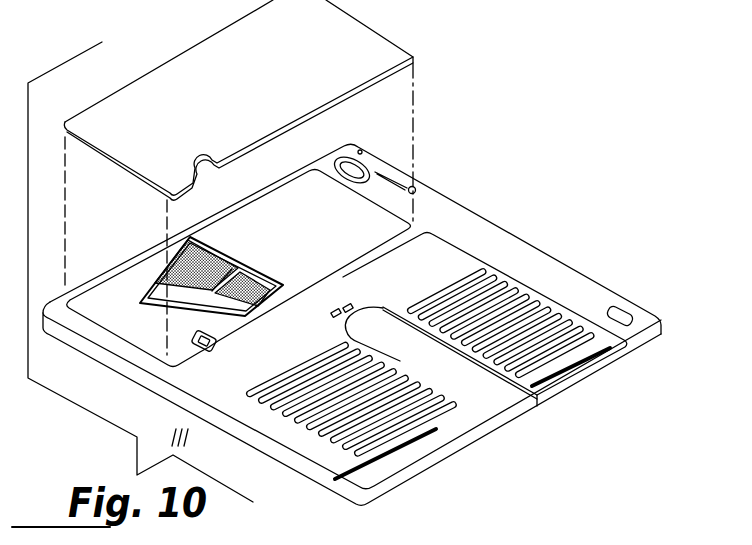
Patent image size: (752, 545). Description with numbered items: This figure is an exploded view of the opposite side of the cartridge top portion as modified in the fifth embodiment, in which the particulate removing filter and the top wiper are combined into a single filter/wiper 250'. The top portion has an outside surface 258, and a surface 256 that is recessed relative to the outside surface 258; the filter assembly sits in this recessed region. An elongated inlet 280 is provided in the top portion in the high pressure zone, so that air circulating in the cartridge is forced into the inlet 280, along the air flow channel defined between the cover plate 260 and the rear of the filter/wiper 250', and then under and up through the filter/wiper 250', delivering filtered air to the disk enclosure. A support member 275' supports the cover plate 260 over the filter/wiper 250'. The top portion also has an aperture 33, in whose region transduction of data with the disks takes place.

The cover plate 260 is at (227, 72).
The outside surface 258 is at (255, 423).
The surface 256 is at (150, 345).
The elongated inlet 280 is at (143, 275).
The filter/wiper 250' is at (201, 229).
The support member 275' is at (269, 259).
The aperture 33 is at (504, 399).